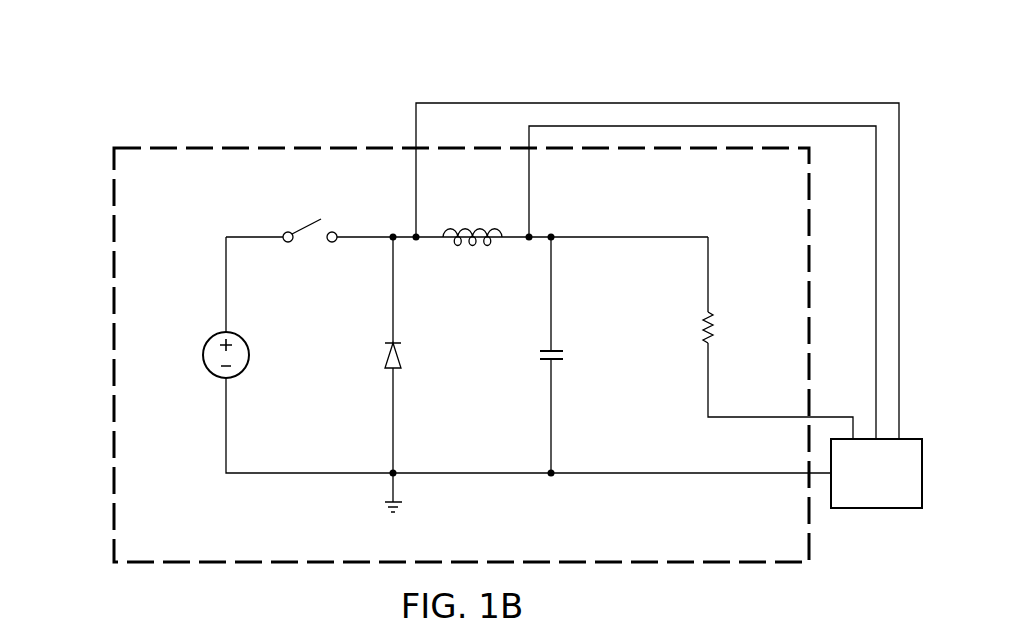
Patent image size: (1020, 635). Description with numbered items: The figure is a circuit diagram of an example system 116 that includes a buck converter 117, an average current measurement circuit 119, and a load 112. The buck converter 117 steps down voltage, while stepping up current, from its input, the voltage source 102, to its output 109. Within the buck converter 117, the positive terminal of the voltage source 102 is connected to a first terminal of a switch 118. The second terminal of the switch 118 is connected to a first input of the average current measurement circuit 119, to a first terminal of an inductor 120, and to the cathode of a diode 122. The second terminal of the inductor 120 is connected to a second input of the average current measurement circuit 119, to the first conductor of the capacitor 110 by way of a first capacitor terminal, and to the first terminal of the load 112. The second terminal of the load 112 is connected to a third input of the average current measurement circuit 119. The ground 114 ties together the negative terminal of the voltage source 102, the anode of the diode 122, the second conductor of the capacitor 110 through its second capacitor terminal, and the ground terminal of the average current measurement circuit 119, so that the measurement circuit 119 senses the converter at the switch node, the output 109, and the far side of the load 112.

The system 116 is at (358, 66).
The buck converter 117 is at (110, 261).
The voltage source 102 is at (202, 355).
The switch 118 is at (312, 225).
The diode 122 is at (380, 352).
The inductor 120 is at (463, 227).
The output 109 is at (555, 243).
The capacitor 110 is at (565, 357).
The load 112 is at (713, 326).
The average current measurement circuit 119 is at (857, 485).
The ground 114 is at (383, 512).